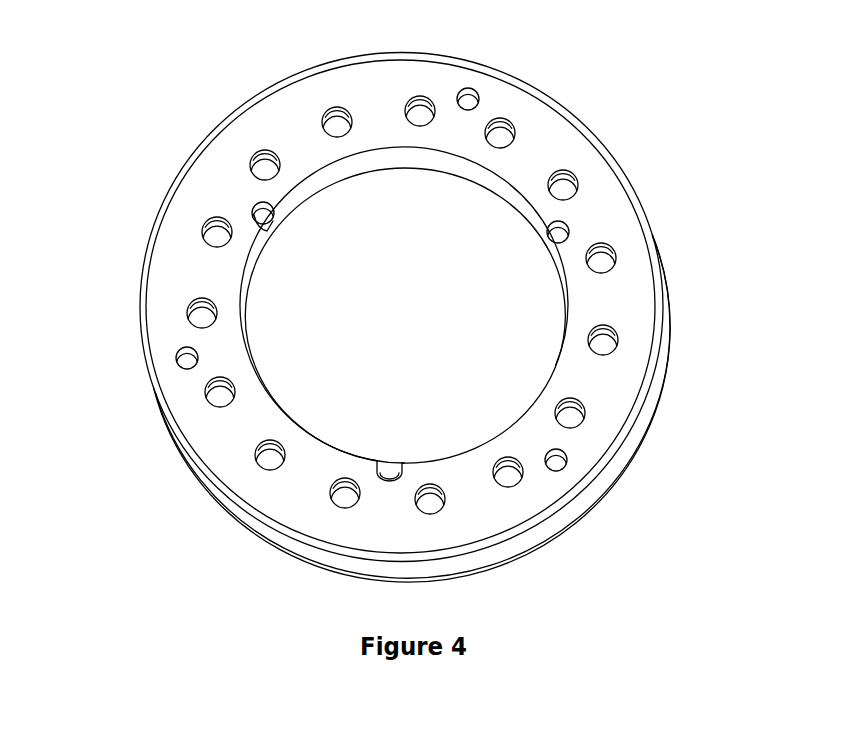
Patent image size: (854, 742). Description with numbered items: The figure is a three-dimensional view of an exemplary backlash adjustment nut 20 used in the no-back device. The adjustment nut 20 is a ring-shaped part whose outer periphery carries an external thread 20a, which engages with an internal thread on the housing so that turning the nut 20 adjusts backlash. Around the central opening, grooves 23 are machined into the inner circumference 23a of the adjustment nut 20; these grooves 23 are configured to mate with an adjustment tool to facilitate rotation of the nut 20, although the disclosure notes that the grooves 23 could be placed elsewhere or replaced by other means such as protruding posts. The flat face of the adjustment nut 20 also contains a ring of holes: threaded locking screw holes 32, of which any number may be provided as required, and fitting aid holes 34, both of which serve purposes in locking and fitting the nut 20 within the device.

The backlash adjustment nut 20 is at (156, 99).
The external thread 20a is at (518, 542).
The grooves 23 is at (560, 230).
The inner circumference 23a is at (382, 160).
The threaded locking screw holes 32 is at (556, 462).
The fitting aid holes 34 is at (277, 458).